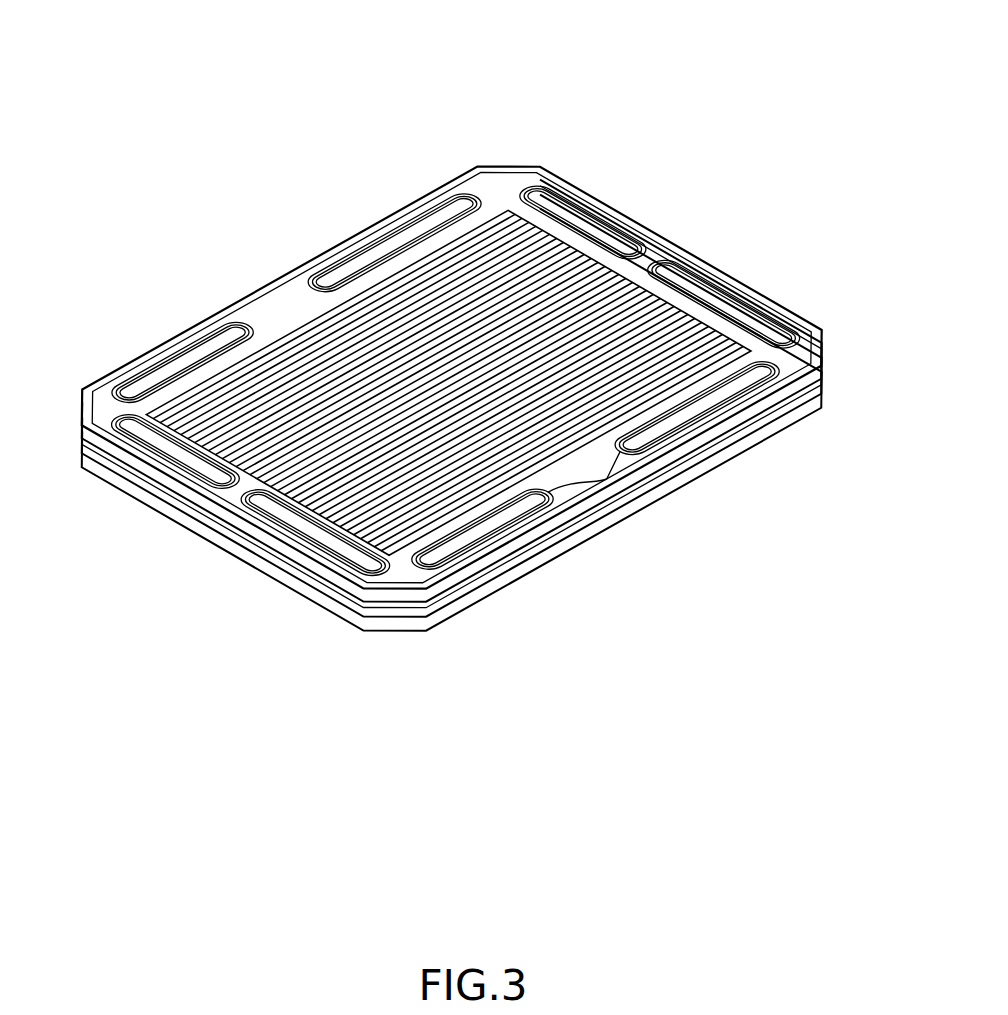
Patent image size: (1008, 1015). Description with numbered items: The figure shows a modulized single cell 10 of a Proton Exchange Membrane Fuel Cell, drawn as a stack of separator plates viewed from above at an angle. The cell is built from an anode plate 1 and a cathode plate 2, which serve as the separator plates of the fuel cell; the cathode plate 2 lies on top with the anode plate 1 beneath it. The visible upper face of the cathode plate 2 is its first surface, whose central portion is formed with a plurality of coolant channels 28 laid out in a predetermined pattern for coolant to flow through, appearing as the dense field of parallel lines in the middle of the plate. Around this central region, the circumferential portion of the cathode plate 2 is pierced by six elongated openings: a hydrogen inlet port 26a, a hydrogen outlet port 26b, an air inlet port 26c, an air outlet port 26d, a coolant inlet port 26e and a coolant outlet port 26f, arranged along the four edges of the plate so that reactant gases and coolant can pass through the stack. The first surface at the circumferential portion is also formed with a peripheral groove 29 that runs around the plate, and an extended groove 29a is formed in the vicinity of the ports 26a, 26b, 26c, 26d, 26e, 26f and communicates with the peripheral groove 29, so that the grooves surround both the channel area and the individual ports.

The modulized single cell 10 is at (512, 122).
The anode plate 1 is at (825, 390).
The cathode plate 2 is at (815, 335).
The hydrogen inlet port 26a is at (700, 405).
The hydrogen outlet port 26b is at (197, 342).
The air inlet port 26c is at (597, 225).
The air outlet port 26d is at (273, 512).
The coolant inlet port 26e is at (493, 518).
The coolant outlet port 26f is at (415, 222).
The coolant channels 28 is at (300, 315).
The peripheral groove 29 is at (683, 430).
The extended groove 29a is at (622, 427).